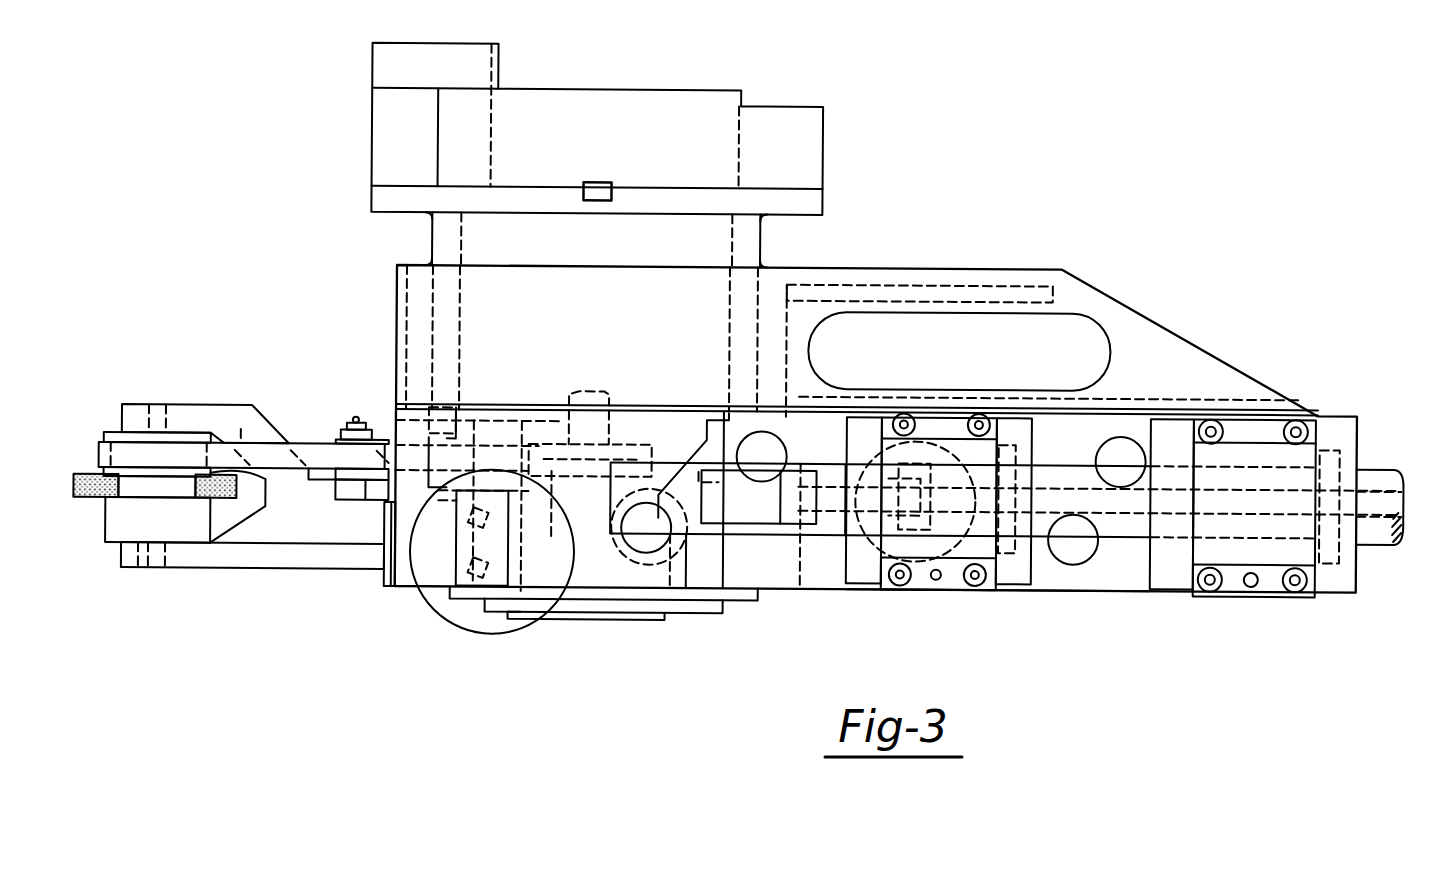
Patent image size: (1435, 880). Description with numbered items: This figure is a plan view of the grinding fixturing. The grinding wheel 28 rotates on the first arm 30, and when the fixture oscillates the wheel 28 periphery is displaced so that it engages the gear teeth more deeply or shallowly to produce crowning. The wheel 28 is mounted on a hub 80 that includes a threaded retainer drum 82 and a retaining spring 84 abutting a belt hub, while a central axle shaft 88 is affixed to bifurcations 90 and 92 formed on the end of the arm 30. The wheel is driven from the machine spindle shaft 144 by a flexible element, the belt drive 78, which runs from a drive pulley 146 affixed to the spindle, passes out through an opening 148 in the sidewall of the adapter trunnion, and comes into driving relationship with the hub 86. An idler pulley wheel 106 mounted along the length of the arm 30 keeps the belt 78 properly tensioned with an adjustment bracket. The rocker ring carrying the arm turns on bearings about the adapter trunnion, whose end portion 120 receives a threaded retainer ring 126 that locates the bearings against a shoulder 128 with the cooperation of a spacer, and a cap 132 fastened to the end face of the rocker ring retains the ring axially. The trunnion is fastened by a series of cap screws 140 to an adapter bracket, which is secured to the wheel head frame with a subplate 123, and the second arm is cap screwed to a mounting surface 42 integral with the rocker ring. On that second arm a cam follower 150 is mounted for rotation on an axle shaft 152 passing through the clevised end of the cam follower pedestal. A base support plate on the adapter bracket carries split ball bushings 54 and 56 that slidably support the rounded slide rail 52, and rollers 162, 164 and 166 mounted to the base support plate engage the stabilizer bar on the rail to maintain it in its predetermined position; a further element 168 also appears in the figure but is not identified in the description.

The grinding wheel 28 is at (213, 540).
The first arm 30 is at (280, 570).
The mounting surface 42 is at (767, 600).
The slide rail 52 is at (1375, 470).
The split ball bushing 54 is at (927, 592).
The split ball bushing 56 is at (1232, 597).
The belt drive 78 is at (265, 443).
The hub 80 is at (100, 547).
The threaded retainer drum 82 is at (103, 542).
The retaining spring 84 is at (214, 476).
The hub 86 is at (242, 440).
The central axle shaft 88 is at (160, 569).
The bifurcation 90 is at (140, 569).
The bifurcation 92 is at (197, 405).
The idler pulley wheel 106 is at (345, 430).
The end portion 120 is at (520, 630).
The subplate 123 is at (371, 133).
The threaded retainer ring 126 is at (493, 620).
The shoulder 128 is at (397, 305).
The cap 132 is at (460, 607).
The cap screws 140 is at (490, 450).
The spindle shaft 144 is at (613, 393).
The drive pulley 146 is at (537, 403).
The opening 148 is at (493, 433).
The cam follower 150 is at (870, 572).
The axle shaft 152 is at (935, 540).
The roller 162 is at (637, 560).
The roller 164 is at (755, 430).
The roller 166 is at (1075, 562).
The bore 168 is at (1122, 434).